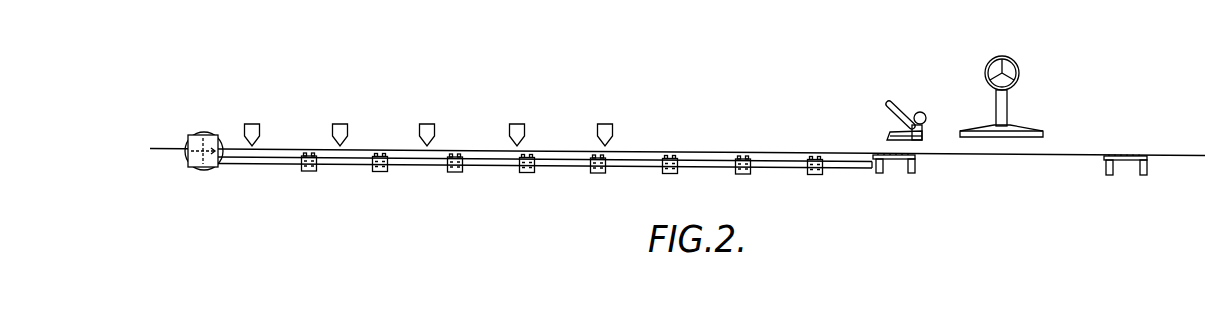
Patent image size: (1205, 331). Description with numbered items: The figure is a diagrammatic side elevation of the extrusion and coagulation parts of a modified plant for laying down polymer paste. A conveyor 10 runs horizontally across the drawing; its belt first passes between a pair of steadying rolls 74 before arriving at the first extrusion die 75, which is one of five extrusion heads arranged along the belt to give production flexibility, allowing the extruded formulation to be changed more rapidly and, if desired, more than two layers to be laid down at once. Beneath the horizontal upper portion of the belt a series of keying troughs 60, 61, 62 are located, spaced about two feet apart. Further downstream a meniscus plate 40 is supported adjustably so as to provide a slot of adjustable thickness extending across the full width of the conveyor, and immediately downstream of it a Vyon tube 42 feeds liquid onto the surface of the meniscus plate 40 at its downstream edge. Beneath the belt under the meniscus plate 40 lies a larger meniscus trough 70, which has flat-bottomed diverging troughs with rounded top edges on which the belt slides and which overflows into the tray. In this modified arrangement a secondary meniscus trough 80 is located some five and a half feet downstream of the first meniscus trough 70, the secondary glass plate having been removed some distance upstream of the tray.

The conveyor 10 is at (721, 153).
The meniscus plate 40 is at (903, 135).
The Vyon tube 42 is at (1028, 131).
The keying trough 60 is at (308, 171).
The keying trough 61 is at (380, 172).
The keying trough 62 is at (455, 173).
The meniscus trough 70 is at (892, 162).
The steadying rolls 74 is at (200, 134).
The first extrusion die 75 is at (250, 124).
The secondary meniscus trough 80 is at (1123, 162).